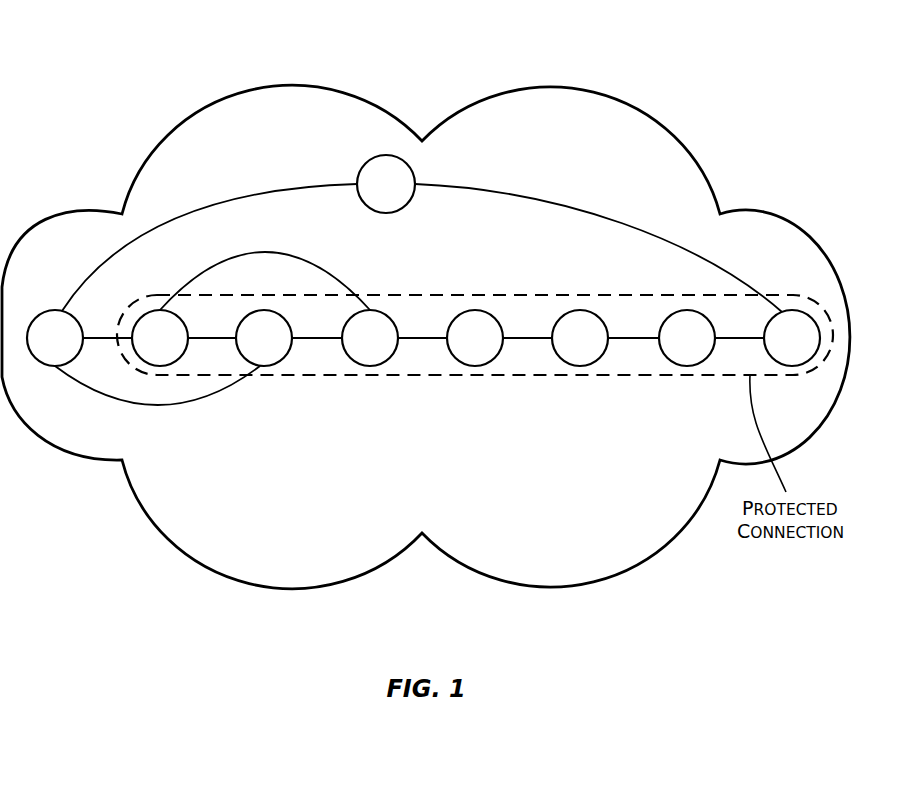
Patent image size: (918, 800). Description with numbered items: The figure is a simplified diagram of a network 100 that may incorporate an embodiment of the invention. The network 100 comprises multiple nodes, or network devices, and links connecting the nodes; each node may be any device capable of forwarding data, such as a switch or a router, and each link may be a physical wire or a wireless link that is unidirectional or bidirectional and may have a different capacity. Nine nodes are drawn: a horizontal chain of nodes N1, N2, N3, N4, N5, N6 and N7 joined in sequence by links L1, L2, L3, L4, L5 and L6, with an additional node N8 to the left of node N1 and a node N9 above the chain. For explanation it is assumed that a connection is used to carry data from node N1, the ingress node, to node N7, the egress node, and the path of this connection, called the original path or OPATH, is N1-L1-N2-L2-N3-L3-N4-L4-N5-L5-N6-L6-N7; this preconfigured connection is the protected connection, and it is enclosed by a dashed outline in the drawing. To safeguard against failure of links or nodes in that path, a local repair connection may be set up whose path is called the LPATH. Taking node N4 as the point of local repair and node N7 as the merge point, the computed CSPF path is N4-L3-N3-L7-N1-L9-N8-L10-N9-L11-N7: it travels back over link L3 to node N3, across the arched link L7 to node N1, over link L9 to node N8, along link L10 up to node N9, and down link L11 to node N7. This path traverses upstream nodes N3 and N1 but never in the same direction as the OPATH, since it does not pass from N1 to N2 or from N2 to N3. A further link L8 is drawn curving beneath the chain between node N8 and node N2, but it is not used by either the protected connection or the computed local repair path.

The network 100 is at (547, 86).
The node N1 is at (160, 338).
The node N2 is at (264, 338).
The node N3 is at (370, 338).
The node N4 is at (475, 338).
The node N5 is at (580, 338).
The node N6 is at (687, 338).
The node N7 is at (792, 338).
The node N8 is at (55, 338).
The node N9 is at (386, 184).
The link L1 is at (212, 328).
The link L2 is at (317, 328).
The link L3 is at (422, 328).
The link L4 is at (527, 328).
The link L5 is at (633, 328).
The link L6 is at (739, 328).
The link L7 is at (265, 281).
The link L8 is at (157, 399).
The link L9 is at (107, 328).
The link L10 is at (209, 247).
The link L11 is at (598, 248).